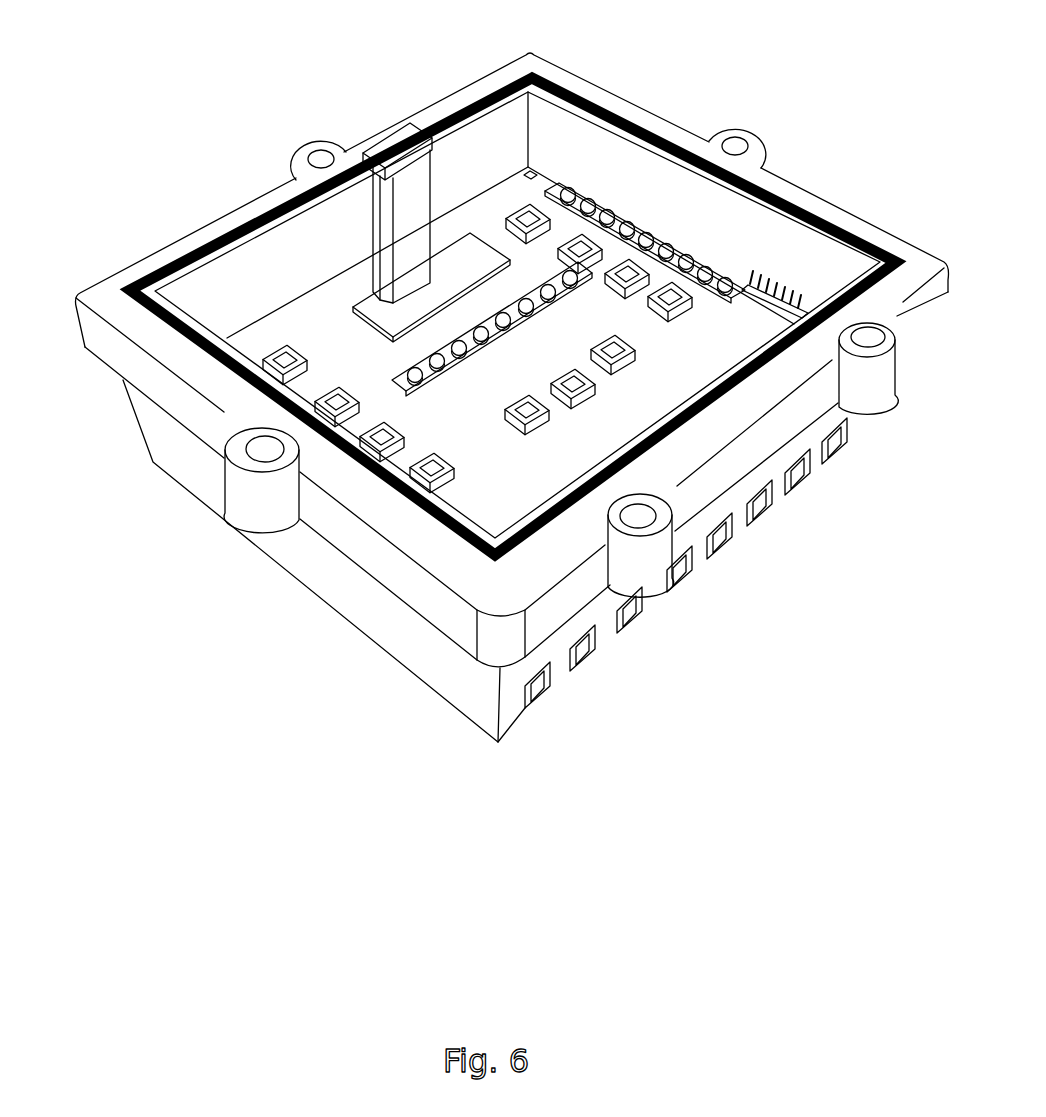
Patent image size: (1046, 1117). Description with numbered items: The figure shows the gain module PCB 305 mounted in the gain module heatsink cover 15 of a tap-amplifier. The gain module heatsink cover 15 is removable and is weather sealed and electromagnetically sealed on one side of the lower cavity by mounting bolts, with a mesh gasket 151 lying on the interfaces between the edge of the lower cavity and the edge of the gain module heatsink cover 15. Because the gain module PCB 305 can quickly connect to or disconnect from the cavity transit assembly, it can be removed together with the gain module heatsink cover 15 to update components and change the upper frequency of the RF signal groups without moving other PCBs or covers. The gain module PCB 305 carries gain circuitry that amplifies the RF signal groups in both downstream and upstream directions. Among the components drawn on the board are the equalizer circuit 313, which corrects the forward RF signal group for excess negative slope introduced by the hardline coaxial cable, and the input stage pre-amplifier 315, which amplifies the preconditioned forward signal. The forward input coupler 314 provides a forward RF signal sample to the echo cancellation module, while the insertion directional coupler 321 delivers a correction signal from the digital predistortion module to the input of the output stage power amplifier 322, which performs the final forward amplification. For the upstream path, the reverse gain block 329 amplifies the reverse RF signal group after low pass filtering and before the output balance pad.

The gain module heatsink cover 15 is at (185, 538).
The mesh gasket 151 is at (297, 190).
The gain module PCB 305 is at (522, 505).
The equalizer circuit 313 is at (470, 256).
The forward input coupler 314 is at (535, 210).
The input stage pre-amplifier 315 is at (637, 265).
The insertion directional coupler 321 is at (262, 347).
The output stage power amplifier 322 is at (375, 450).
The reverse gain block 329 is at (583, 395).